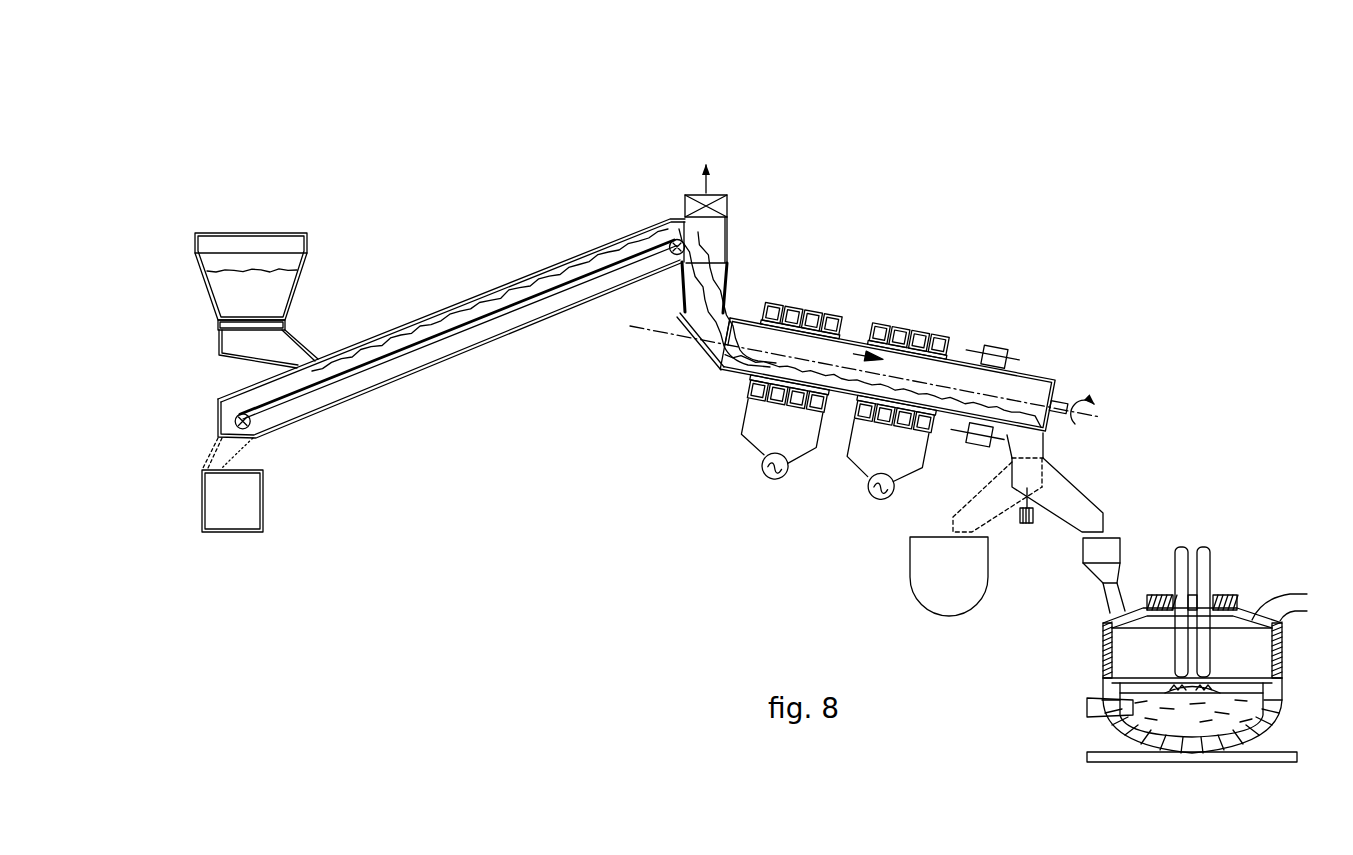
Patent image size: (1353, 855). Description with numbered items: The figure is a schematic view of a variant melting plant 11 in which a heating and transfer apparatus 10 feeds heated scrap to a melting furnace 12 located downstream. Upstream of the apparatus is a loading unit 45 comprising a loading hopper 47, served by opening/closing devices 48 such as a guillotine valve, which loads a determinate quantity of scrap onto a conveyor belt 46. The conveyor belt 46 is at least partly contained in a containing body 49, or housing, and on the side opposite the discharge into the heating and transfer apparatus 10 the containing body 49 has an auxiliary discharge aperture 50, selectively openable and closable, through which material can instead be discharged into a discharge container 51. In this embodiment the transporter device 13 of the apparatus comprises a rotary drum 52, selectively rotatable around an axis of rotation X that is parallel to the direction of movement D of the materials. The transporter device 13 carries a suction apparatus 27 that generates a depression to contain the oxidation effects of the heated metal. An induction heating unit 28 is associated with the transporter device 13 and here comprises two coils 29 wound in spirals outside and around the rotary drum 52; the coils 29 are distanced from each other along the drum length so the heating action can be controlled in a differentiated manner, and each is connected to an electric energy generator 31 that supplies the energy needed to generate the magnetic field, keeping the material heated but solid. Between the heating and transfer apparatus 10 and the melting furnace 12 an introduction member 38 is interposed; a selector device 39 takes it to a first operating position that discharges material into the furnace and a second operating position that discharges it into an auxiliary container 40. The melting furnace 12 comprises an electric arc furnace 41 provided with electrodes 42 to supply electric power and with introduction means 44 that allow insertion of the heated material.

The heating and transfer apparatus 10 is at (898, 256).
The melting plant 11 is at (1150, 231).
The melting furnace 12 is at (1177, 634).
The transporter device 13 is at (742, 302).
The suction apparatus 27 is at (731, 204).
The induction heating unit 28 is at (938, 322).
The coils 29 is at (789, 302).
The electric energy generator 31 is at (773, 475).
The introduction member 38 is at (1098, 501).
The selector device 39 is at (1028, 521).
The auxiliary container 40 is at (935, 592).
The electric arc furnace 41 is at (1112, 692).
The electrodes 42 is at (1203, 556).
The introduction means 44 is at (1123, 536).
The loading unit 45 is at (491, 282).
The conveyor belt 46 is at (514, 322).
The loading hopper 47 is at (263, 226).
The opening/closing devices 48 is at (272, 325).
The containing body 49 is at (555, 266).
The auxiliary discharge aperture 50 is at (232, 437).
The discharge container 51 is at (247, 500).
The rotary drum 52 is at (1040, 374).
The direction of movement D is at (850, 350).
The axis of rotation X is at (644, 334).